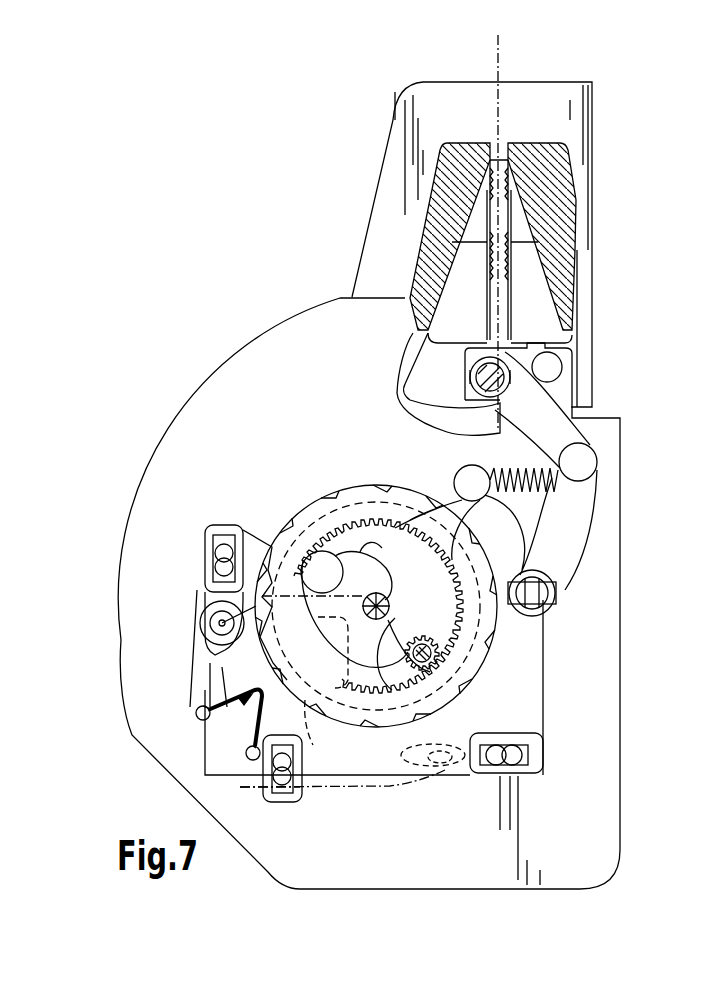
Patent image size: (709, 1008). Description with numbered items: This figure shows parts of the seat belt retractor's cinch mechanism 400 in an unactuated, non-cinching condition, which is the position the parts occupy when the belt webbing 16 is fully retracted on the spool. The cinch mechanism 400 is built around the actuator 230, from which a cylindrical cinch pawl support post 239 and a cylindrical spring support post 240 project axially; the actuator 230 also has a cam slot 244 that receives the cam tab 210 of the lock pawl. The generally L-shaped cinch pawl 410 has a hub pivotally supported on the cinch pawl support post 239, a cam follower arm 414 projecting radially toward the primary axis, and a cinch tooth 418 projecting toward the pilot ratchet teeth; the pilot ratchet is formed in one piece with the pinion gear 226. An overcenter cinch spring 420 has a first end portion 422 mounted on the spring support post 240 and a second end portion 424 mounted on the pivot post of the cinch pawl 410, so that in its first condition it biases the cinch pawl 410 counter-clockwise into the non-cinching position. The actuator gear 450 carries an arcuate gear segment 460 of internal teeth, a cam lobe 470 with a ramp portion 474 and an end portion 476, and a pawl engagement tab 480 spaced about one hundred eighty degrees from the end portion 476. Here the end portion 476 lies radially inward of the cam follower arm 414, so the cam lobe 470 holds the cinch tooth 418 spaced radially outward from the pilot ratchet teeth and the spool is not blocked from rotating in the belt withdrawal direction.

The belt webbing 16 is at (503, 58).
The cinch mechanism 400 is at (304, 456).
The end portion 476 is at (205, 545).
The cinch pawl support post 239 is at (221, 622).
The cam follower arm 414 is at (203, 665).
The cinch pawl 410 is at (205, 648).
The cinch tooth 418 is at (222, 660).
The spring support post 240 is at (250, 760).
The cinch spring 420 is at (245, 735).
The second end portion 424 is at (200, 717).
The first end portion 422 is at (248, 755).
The pinion gear 226 is at (394, 595).
The arcuate gear segment 460 is at (348, 652).
The pawl engagement tab 480 is at (480, 628).
The actuator gear 450 is at (464, 697).
The cam lobe 470 is at (307, 768).
The ramp portion 474 is at (357, 715).
The cam slot 244 is at (462, 767).
The cam tab 210 is at (433, 765).
The actuator 230 is at (350, 785).